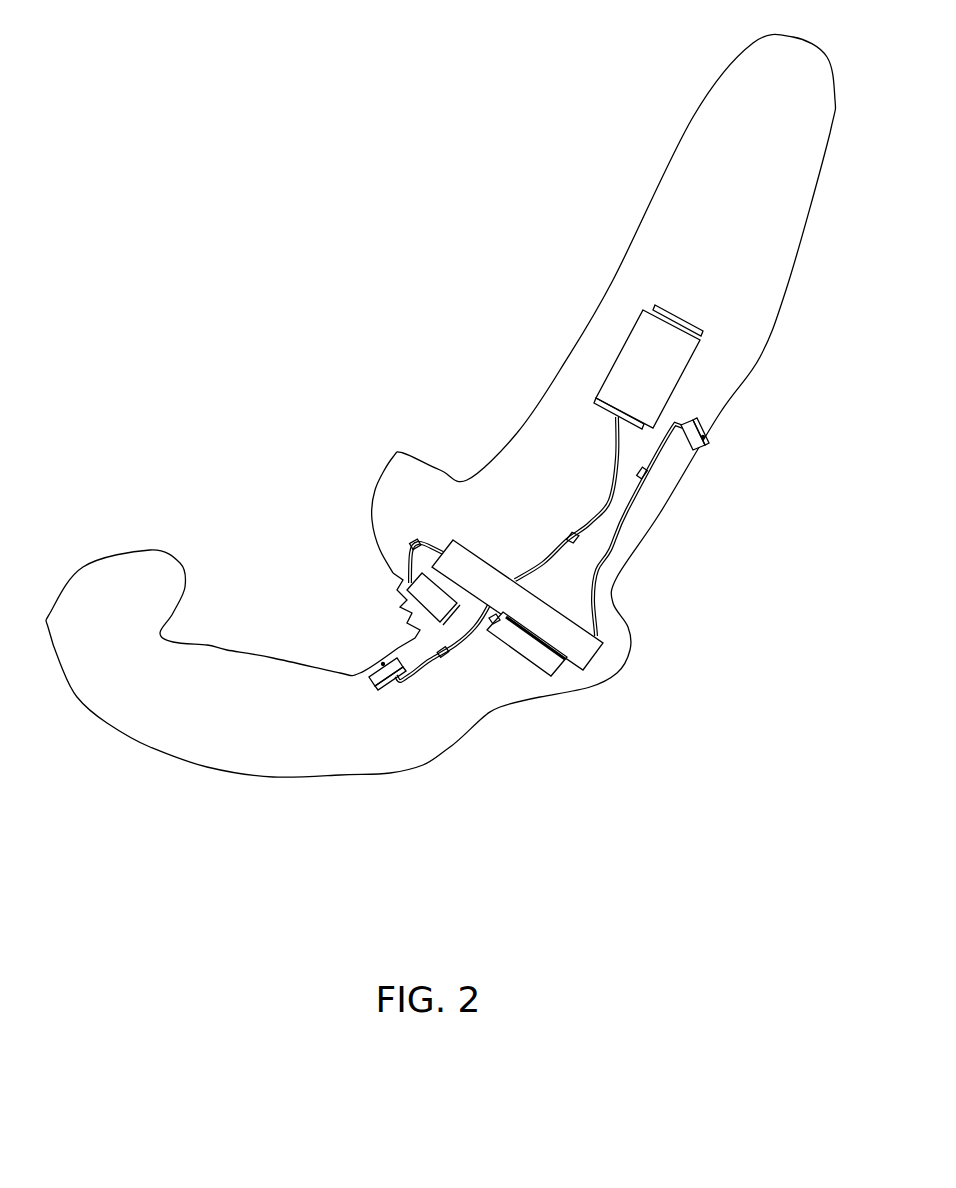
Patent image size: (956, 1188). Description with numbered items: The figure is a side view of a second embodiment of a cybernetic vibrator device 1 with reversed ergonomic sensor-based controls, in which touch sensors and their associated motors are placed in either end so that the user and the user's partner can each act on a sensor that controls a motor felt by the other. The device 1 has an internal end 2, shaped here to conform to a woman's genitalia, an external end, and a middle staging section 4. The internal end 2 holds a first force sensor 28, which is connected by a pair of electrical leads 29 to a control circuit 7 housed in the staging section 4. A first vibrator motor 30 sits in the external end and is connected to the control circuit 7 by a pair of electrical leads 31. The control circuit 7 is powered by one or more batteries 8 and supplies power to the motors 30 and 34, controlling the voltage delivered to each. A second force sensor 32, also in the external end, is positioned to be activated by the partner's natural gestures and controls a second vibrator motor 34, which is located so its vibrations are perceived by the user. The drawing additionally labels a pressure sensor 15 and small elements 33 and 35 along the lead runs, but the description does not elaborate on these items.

The device 1 is at (697, 27).
The internal end 2 is at (259, 653).
The staging section 4 is at (375, 534).
The control circuit 7 is at (517, 605).
The batteries 8 is at (527, 644).
The pressure sensor 15 is at (258, 158).
The first force sensor 28 is at (405, 643).
The pair of electrical leads 29 is at (444, 655).
The first vibrator motor 30 is at (648, 367).
The pair of electrical leads 31 is at (573, 536).
The second force sensor 32 is at (683, 458).
The connector 33 is at (643, 475).
The second vibrator motor 34 is at (433, 599).
The connector 35 is at (415, 545).